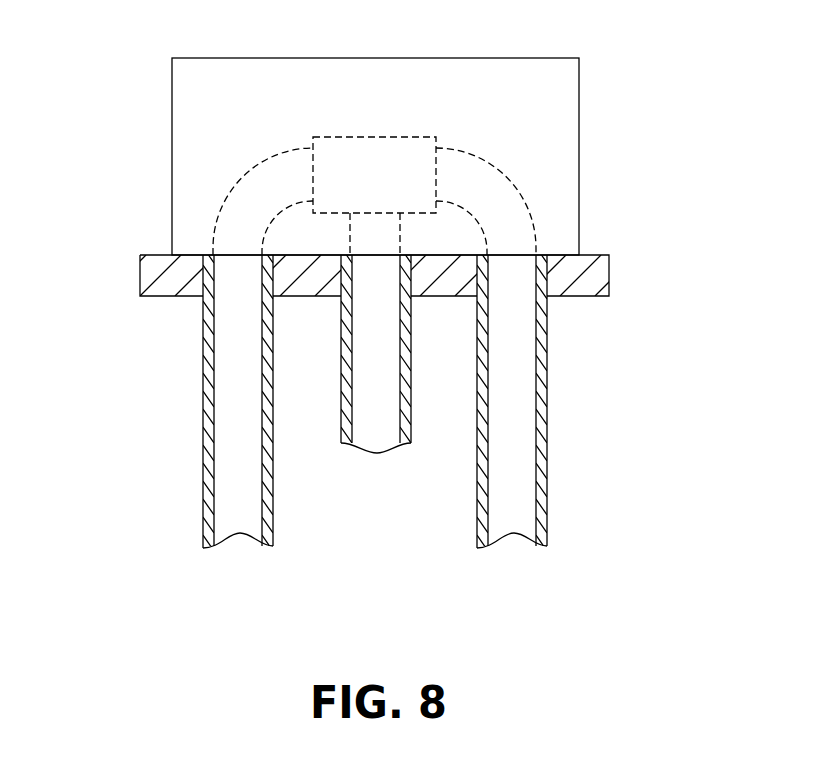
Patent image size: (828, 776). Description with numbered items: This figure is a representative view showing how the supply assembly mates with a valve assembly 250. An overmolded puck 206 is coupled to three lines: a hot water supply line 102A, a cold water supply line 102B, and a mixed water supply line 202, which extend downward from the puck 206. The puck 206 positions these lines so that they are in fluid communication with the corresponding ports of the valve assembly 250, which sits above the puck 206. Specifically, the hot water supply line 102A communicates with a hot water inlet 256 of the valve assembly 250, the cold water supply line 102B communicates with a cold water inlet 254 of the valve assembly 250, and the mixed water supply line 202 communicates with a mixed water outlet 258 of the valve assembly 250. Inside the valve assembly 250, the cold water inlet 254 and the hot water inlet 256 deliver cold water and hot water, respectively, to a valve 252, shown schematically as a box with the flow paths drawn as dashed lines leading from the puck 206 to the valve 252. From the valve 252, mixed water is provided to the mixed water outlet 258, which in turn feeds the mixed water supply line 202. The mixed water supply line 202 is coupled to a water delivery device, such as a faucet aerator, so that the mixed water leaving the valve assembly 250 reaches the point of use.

The valve assembly 250 is at (581, 90).
The valve 252 is at (313, 138).
The cold water inlet 254 is at (232, 187).
The hot water inlet 256 is at (510, 177).
The mixed water outlet 258 is at (402, 237).
The overmolded puck 206 is at (621, 273).
The hot water supply line 102A is at (550, 404).
The cold water supply line 102B is at (200, 460).
The mixed water supply line 202 is at (417, 411).